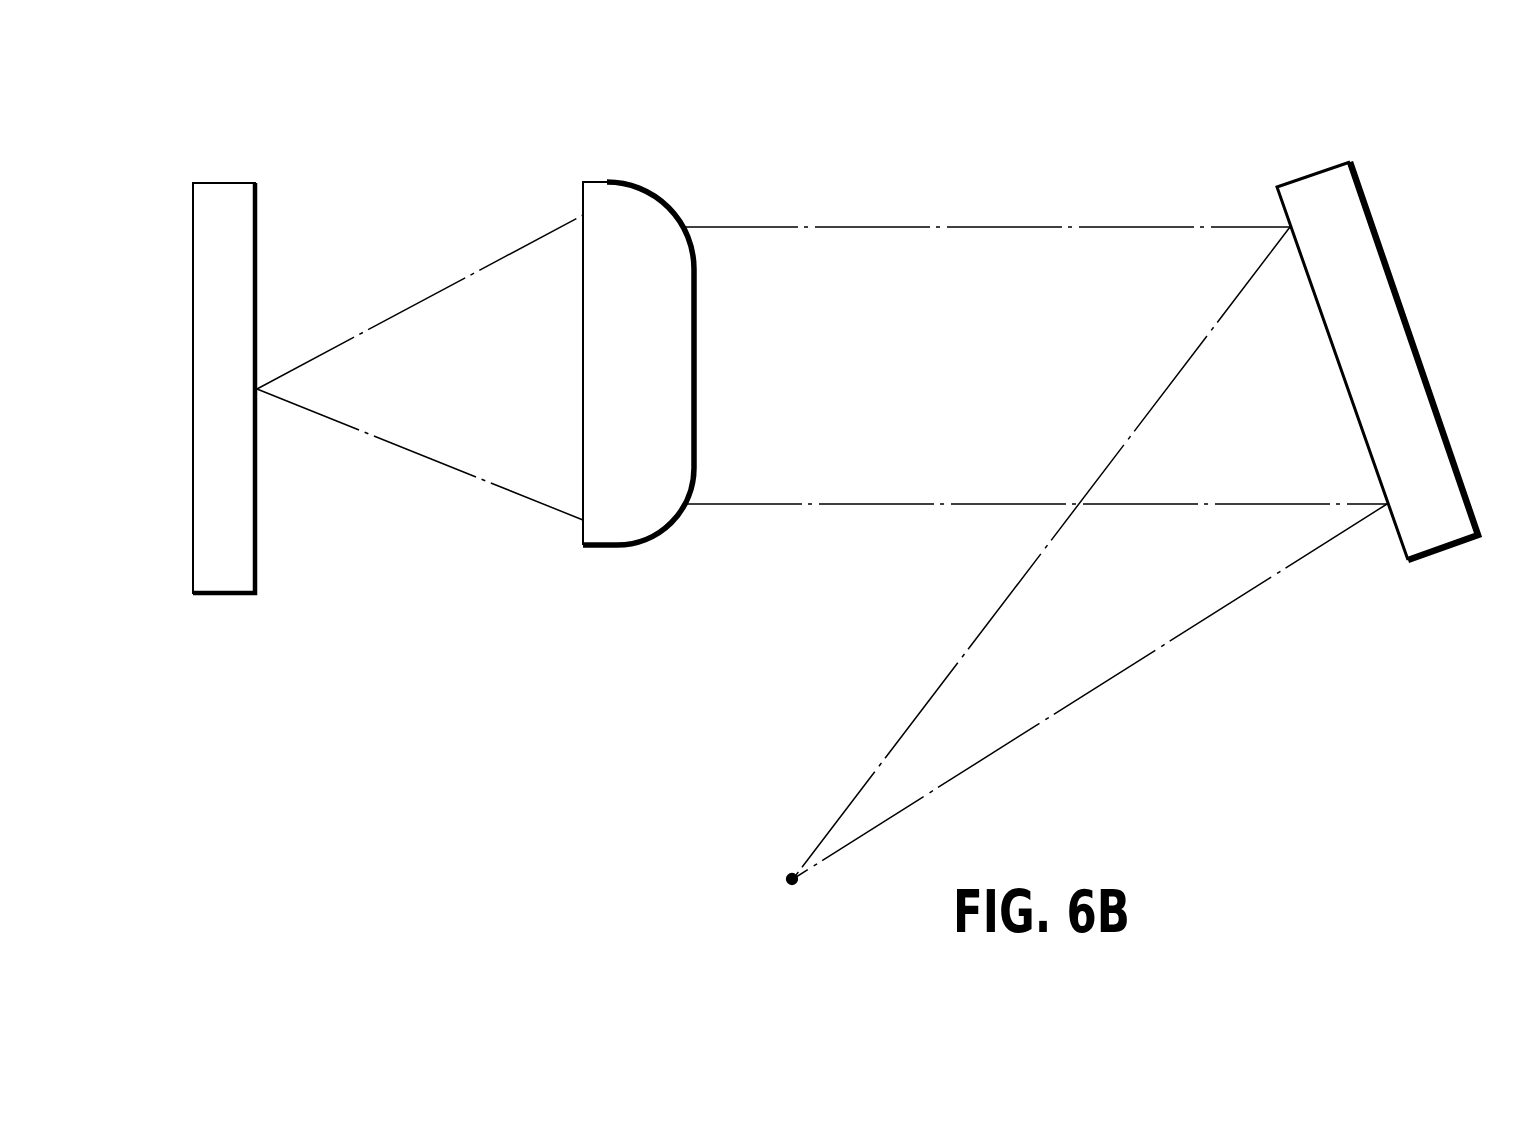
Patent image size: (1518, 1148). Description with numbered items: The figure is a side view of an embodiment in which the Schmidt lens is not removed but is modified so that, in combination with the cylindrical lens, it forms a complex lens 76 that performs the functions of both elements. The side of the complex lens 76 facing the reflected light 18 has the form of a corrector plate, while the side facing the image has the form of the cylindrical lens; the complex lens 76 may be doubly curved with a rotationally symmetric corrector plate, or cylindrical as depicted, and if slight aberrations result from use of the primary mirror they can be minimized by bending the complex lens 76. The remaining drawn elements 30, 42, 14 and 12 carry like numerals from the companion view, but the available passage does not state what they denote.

The display / object plane 30 is at (229, 187).
The complex lens 76 is at (642, 202).
The reflected light 18 is at (948, 228).
The tilted mirror / reflector 42 is at (1313, 183).
The reflected light rays 14 is at (1050, 720).
The focal point / eye position 12 is at (787, 876).